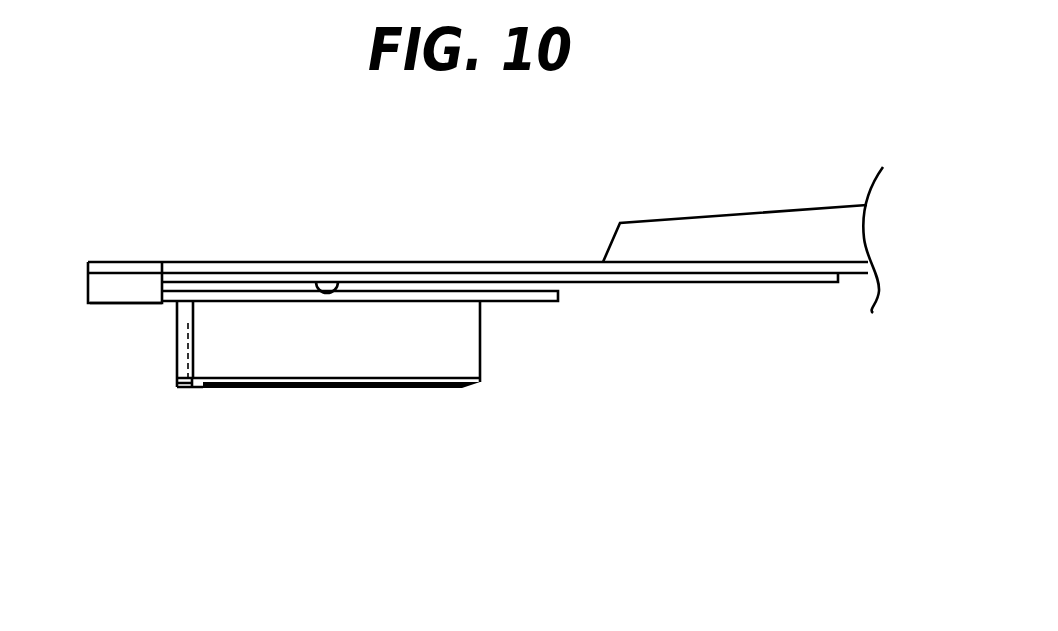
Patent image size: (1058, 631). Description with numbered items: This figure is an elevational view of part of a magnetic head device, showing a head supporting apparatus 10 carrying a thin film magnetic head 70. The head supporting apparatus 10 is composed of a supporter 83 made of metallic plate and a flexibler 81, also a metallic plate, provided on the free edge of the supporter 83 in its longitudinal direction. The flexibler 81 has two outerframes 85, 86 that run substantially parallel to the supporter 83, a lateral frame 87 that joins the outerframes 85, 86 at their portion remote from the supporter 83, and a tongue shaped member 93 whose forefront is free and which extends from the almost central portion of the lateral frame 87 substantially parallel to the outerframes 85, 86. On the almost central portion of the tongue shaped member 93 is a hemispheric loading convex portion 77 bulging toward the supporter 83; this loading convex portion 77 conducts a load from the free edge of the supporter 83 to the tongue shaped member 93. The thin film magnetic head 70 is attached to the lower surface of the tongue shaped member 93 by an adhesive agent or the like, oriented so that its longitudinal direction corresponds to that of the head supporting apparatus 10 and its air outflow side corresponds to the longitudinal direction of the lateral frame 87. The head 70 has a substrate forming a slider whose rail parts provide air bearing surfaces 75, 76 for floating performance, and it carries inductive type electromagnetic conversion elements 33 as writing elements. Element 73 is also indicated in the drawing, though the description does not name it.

The head supporting apparatus 10 is at (546, 255).
The inductive type electromagnetic conversion element 33 is at (182, 390).
The thin film magnetic head 70 is at (318, 395).
The side wall 73 is at (462, 346).
The air bearing surface 75 is at (376, 420).
The air bearing surface 76 is at (420, 389).
The loading convex portion 77 is at (327, 287).
The flexibler 81 is at (150, 319).
The supporter 83 is at (427, 273).
The outerframe 85 is at (478, 220).
The outerframe 86 is at (213, 262).
The lateral frame 87 is at (97, 283).
The tongue shaped member 93 is at (507, 295).